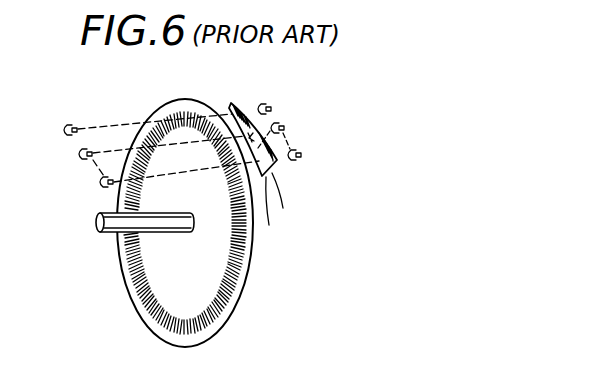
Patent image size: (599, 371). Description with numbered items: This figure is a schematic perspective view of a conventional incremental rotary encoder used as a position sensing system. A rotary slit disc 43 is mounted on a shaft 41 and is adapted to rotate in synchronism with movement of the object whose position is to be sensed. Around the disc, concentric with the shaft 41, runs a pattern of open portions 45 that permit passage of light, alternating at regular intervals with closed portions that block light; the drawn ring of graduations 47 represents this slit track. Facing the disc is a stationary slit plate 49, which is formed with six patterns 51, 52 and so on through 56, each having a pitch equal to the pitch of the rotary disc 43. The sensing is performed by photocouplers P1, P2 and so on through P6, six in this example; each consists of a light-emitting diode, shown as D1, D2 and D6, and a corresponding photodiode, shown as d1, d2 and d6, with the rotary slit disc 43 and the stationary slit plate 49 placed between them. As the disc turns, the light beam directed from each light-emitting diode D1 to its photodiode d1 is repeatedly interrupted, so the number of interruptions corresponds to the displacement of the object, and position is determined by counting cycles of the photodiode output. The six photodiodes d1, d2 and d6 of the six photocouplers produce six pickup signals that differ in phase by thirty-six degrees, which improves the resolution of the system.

The shaft 41 is at (99, 232).
The rotary slit disc 43 is at (253, 248).
The open portions 45 is at (205, 223).
The slit track 47 is at (243, 293).
The stationary slit plate 49 is at (275, 212).
The pattern 51 is at (240, 104).
The pattern 52 is at (276, 169).
The pattern 56 is at (288, 197).
The photocoupler P1 is at (65, 127).
The photocoupler P2 is at (78, 152).
The photocoupler P6 is at (98, 181).
The light-emitting diode D1 is at (63, 131).
The light-emitting diode D2 is at (80, 158).
The light-emitting diode D6 is at (102, 188).
The photodiode d1 is at (273, 108).
The photodiode d2 is at (286, 128).
The photodiode d6 is at (302, 156).